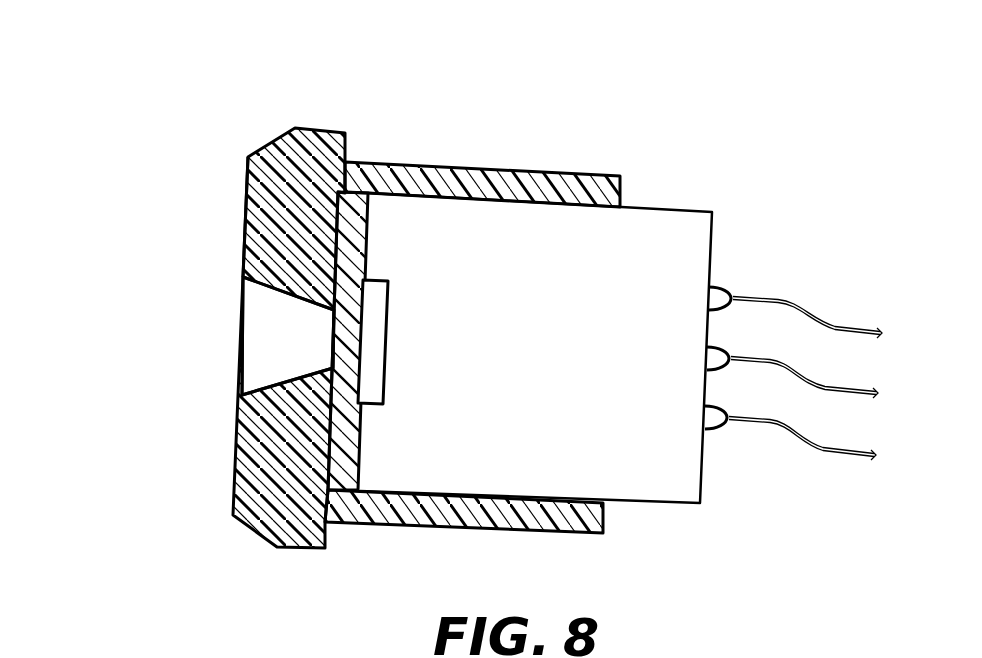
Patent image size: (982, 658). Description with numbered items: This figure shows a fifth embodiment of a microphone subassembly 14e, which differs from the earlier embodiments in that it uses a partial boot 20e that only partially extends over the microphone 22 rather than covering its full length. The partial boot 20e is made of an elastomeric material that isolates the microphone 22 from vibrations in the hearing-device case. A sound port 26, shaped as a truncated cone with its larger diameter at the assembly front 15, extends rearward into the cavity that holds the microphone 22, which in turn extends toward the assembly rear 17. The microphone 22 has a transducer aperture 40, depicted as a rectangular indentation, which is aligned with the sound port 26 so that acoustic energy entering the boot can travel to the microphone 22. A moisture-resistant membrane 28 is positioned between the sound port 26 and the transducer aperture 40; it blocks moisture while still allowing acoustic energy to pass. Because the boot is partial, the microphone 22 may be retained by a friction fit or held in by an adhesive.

The microphone subassembly 14e is at (476, 276).
The partial boot 20e is at (310, 160).
The membrane 28 is at (358, 207).
The microphone 22 is at (655, 245).
The assembly front 15 is at (247, 215).
The sound port 26 is at (257, 333).
The transducer aperture 40 is at (372, 338).
The assembly rear 17 is at (702, 475).